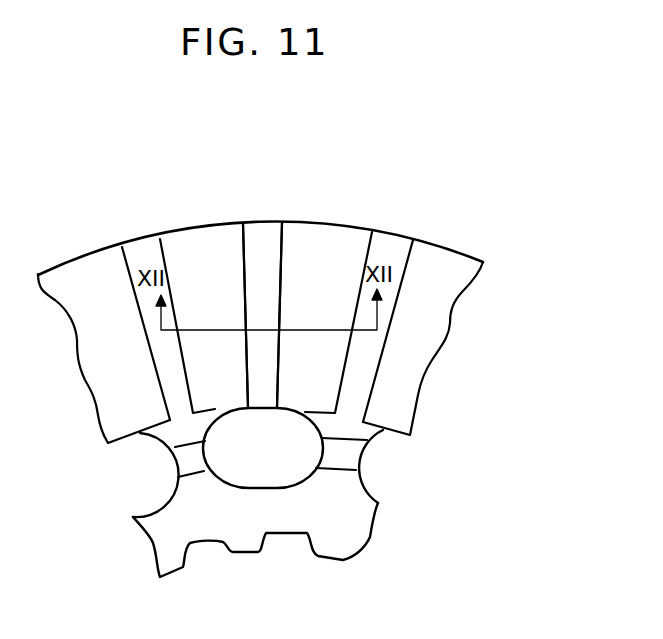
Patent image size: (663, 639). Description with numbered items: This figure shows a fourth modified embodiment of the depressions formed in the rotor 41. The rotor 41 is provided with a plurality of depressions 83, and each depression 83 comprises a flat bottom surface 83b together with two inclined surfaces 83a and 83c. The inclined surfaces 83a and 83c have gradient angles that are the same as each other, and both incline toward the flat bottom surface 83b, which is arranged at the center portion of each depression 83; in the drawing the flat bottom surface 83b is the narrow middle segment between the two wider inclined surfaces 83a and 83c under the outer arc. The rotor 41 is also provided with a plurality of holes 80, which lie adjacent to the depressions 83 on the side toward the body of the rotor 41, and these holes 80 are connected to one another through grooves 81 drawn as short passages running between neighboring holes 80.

The depression 83 is at (238, 217).
The inclined surface 83a is at (192, 245).
The flat bottom surface 83b is at (265, 233).
The inclined surface 83c is at (335, 235).
The hole 80 is at (318, 428).
The groove 81 is at (343, 460).
The rotor 41 is at (353, 532).